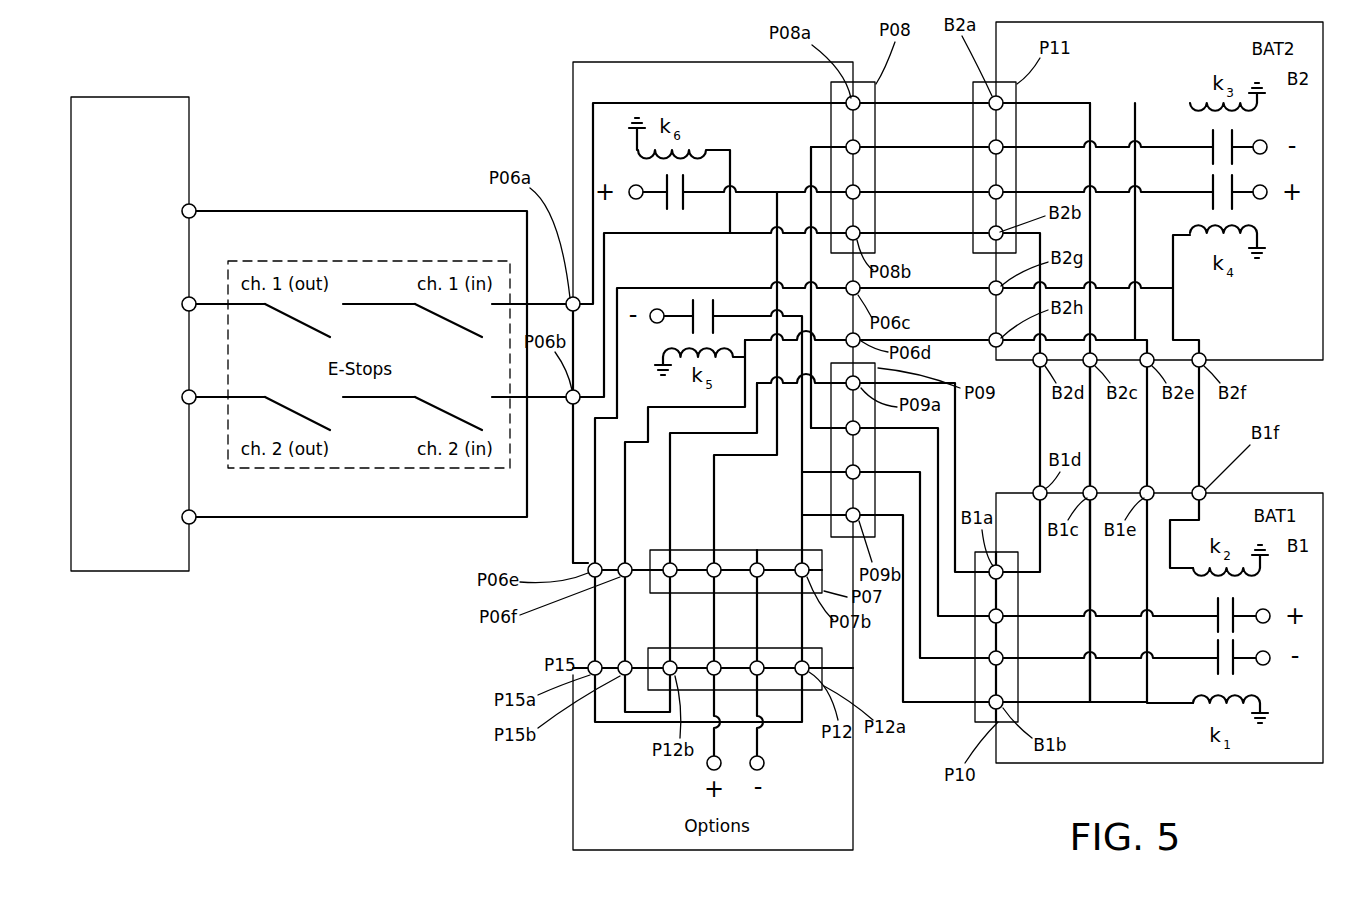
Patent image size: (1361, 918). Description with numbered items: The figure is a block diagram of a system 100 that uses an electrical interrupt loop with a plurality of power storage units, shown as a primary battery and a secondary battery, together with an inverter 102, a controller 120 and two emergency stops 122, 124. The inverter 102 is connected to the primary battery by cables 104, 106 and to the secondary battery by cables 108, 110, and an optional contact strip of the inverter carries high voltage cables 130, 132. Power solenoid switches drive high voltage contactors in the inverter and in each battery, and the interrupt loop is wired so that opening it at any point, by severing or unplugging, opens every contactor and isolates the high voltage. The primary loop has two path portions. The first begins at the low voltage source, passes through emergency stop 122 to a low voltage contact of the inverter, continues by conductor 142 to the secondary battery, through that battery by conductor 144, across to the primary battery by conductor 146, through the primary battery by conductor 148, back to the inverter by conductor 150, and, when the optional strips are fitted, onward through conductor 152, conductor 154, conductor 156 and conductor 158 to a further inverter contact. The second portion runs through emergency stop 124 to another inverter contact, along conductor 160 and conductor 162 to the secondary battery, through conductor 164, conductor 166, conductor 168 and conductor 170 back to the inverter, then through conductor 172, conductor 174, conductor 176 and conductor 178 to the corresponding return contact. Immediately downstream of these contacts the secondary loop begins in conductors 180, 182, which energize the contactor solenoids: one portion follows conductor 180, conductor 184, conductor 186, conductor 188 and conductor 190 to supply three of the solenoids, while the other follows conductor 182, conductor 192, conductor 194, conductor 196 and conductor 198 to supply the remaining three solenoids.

The system 100 is at (488, 66).
The inverter 102 is at (713, 456).
The cable 104 is at (942, 492).
The cable 106 is at (923, 645).
The cable 108 is at (947, 146).
The cable 110 is at (945, 191).
The controller 120 is at (130, 334).
The emergency stop 122 is at (375, 295).
The emergency stop 124 is at (360, 410).
The high voltage cable 130 is at (717, 640).
The high voltage cable 132 is at (760, 640).
The conductor 142 is at (932, 102).
The conductor 144 is at (1092, 103).
The conductor 146 is at (1093, 440).
The conductor 148 is at (1093, 555).
The conductor 150 is at (905, 715).
The conductor 152 is at (822, 514).
The conductor 154 is at (823, 662).
The conductor 156 is at (790, 724).
The conductor 158 is at (594, 608).
The conductor 160 is at (676, 237).
The conductor 162 is at (907, 232).
The conductor 164 is at (1043, 247).
The conductor 166 is at (1042, 440).
The conductor 168 is at (1043, 555).
The conductor 170 is at (958, 448).
The conductor 172 is at (673, 515).
The conductor 174 is at (673, 640).
The conductor 176 is at (638, 724).
The conductor 178 is at (630, 640).
The conductor 180 is at (550, 433).
The conductor 182 is at (628, 505).
The conductor 184 is at (947, 287).
The conductor 186 is at (1166, 287).
The conductor 188 is at (1203, 445).
The conductor 190 is at (1190, 520).
The conductor 192 is at (948, 339).
The conductor 194 is at (1114, 338).
The conductor 196 is at (1150, 443).
The conductor 198 is at (1170, 705).